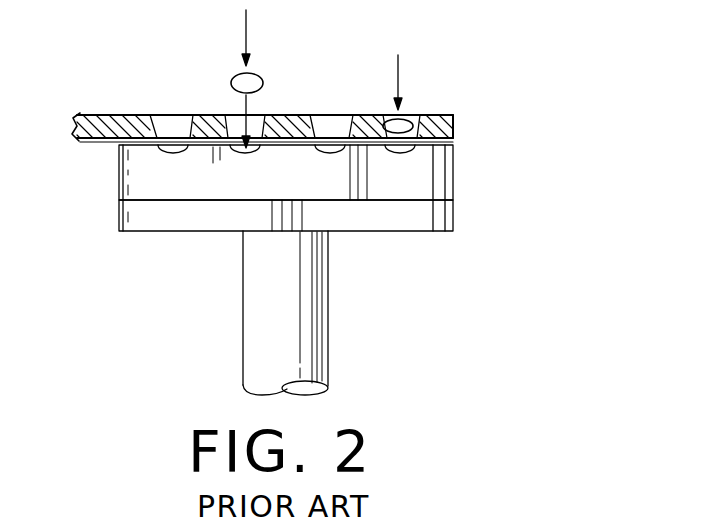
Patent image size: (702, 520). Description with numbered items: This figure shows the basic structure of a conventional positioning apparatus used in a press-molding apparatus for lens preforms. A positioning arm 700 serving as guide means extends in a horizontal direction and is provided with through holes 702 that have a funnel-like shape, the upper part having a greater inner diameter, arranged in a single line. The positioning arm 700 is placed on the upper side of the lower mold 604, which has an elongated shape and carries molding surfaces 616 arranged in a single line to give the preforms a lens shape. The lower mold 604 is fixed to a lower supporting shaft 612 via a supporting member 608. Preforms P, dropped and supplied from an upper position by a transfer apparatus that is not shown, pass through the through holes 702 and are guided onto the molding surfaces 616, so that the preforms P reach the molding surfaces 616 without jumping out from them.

The positioning arm 700 is at (443, 115).
The through holes 702 is at (158, 125).
The lower mold 604 is at (453, 165).
The supporting member 608 is at (453, 210).
The lower supporting shaft 612 is at (313, 322).
The molding surfaces 616 is at (257, 153).
The preforms P is at (262, 77).